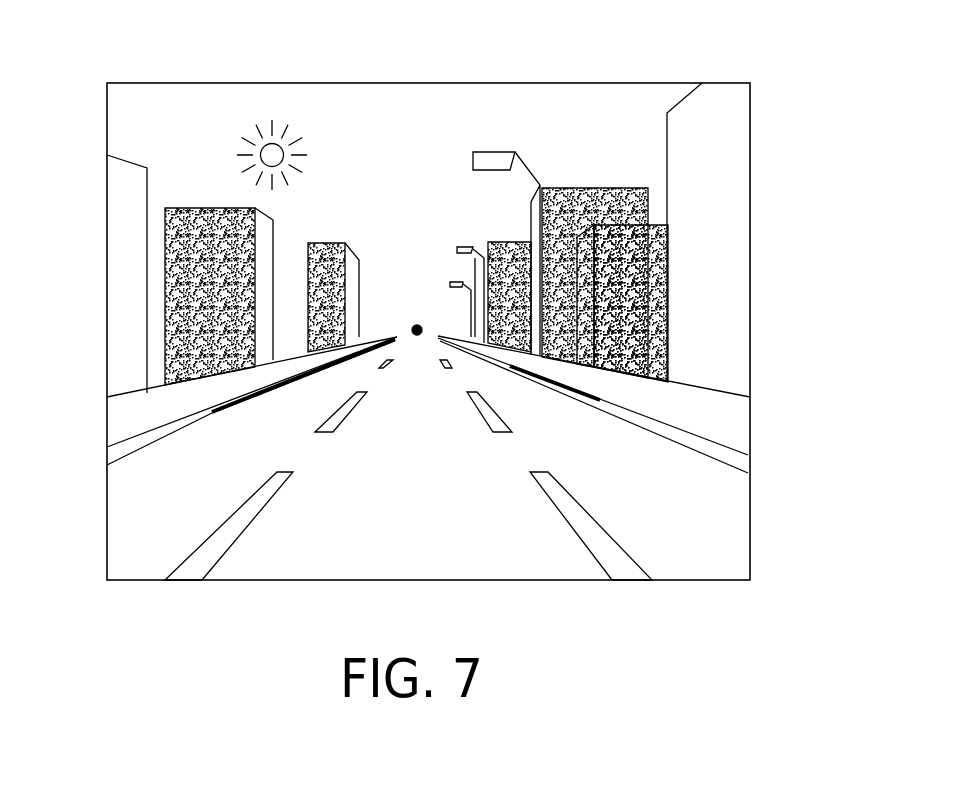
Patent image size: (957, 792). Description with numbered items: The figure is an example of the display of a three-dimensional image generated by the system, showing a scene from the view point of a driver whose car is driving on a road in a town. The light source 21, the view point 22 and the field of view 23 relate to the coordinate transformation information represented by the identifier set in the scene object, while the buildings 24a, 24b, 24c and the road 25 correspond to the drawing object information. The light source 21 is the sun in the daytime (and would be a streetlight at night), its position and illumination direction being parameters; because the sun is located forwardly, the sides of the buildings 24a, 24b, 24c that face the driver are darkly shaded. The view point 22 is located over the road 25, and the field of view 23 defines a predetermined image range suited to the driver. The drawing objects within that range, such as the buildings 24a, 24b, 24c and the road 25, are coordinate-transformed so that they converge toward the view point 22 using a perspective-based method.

The light source 21 is at (285, 105).
The view point 22 is at (423, 318).
The field of view 23 is at (752, 224).
The building 24a is at (720, 118).
The building 24b is at (133, 192).
The building 24c is at (195, 218).
The road 25 is at (155, 533).